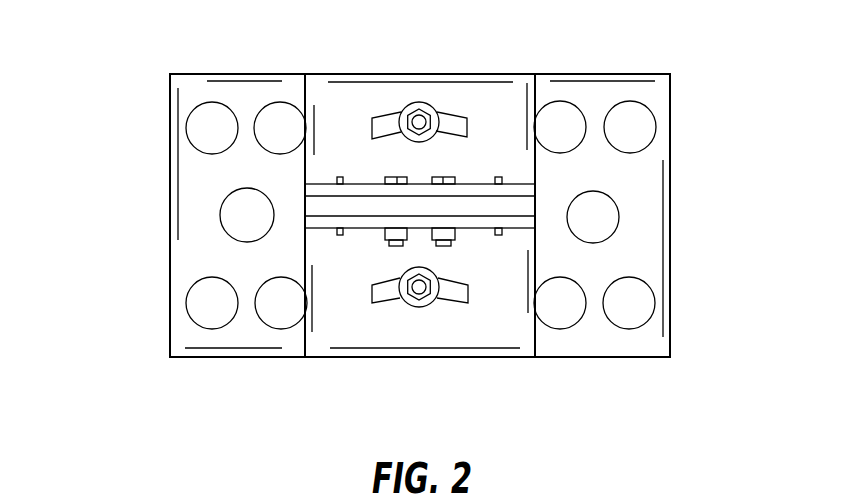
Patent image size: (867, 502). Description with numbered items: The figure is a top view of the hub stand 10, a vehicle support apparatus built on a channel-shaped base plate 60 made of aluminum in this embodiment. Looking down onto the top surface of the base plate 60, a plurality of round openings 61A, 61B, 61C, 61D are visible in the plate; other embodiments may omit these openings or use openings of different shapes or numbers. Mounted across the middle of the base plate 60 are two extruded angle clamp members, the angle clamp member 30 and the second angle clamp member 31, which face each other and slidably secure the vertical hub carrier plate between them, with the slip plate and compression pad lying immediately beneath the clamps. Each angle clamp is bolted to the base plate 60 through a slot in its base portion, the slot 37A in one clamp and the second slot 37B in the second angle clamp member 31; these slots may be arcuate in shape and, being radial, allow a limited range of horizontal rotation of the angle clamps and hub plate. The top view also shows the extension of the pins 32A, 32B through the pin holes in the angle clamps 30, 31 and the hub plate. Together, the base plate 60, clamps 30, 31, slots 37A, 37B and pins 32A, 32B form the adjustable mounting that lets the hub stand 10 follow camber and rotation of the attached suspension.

The hub stand 10 is at (112, 369).
The angle clamp member 30 is at (360, 222).
The second angle clamp member 31 is at (360, 190).
The pin 32A is at (340, 177).
The pin 32B is at (500, 177).
The slot 37A is at (455, 293).
The slot 37B is at (453, 123).
The base plate 60 is at (643, 245).
The round opening 61A is at (213, 317).
The round opening 61B is at (240, 217).
The round opening 61C is at (602, 210).
The round opening 61D is at (633, 303).